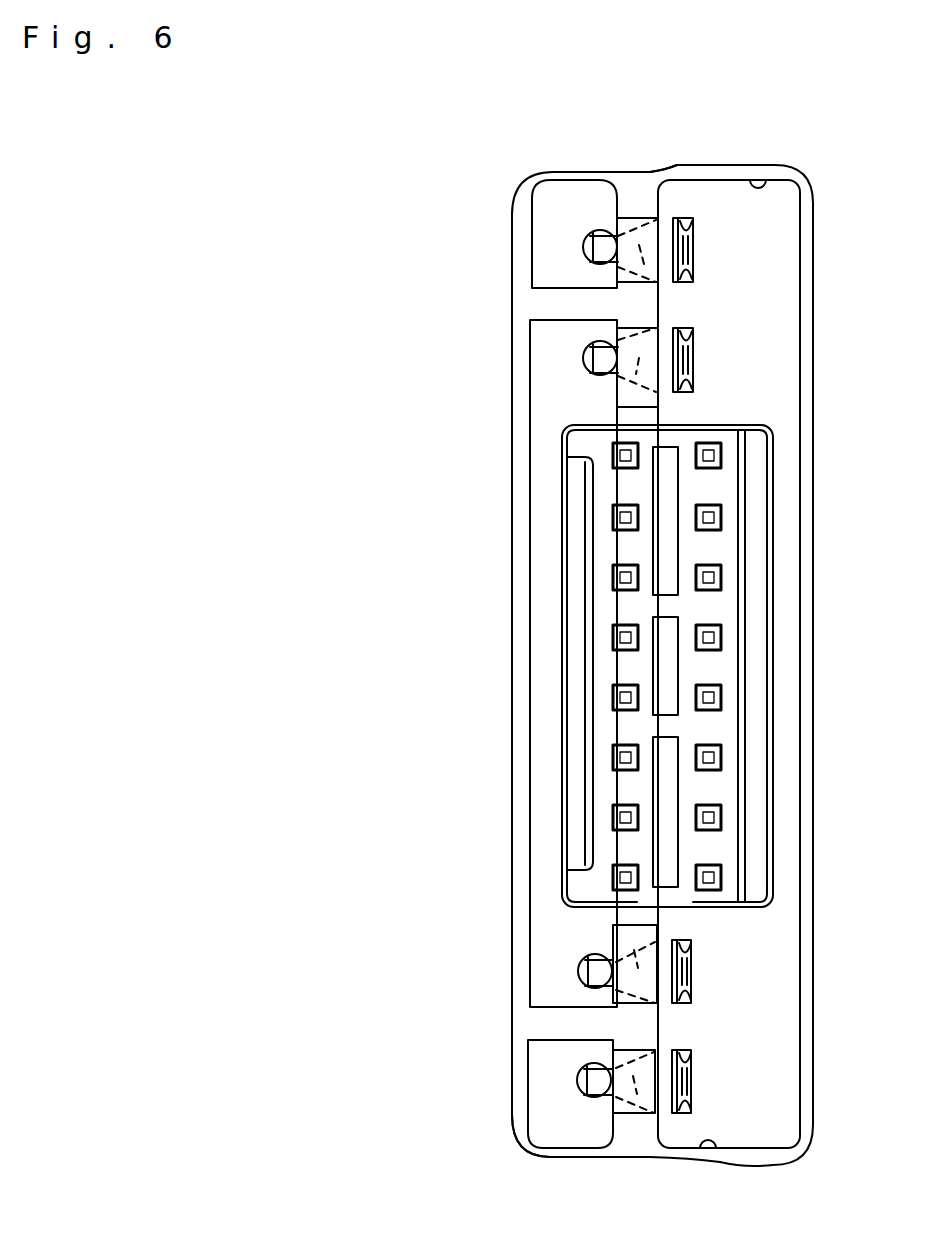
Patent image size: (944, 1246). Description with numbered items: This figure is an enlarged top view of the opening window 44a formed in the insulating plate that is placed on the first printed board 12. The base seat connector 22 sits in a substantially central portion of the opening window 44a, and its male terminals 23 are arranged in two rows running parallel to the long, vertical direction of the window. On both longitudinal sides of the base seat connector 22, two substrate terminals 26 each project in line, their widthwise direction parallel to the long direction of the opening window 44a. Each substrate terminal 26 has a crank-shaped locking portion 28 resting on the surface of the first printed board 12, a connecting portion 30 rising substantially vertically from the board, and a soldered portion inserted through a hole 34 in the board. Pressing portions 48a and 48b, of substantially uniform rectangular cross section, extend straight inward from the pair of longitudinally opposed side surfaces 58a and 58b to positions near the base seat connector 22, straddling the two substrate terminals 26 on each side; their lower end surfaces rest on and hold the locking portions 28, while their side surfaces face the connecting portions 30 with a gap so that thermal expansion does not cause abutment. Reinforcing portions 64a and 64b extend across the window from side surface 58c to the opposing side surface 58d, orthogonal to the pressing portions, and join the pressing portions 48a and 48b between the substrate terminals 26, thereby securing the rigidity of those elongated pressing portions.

The first printed board 12 is at (548, 778).
The base seat connector 22 is at (553, 914).
The male terminals 23 is at (712, 522).
The substrate terminal 26 is at (718, 258).
The locking portion 28 is at (617, 267).
The connecting portion 30 is at (695, 236).
The through hole 34 is at (585, 238).
The opening window 44a is at (540, 1146).
The pressing portion 48a is at (637, 205).
The pressing portion 48b is at (633, 1122).
The side surface 58a is at (759, 181).
The side surface 58b is at (708, 1150).
The side surface 58c is at (798, 606).
The side surface 58d is at (540, 546).
The reinforcing portion 64a is at (575, 303).
The reinforcing portion 64b is at (575, 1033).